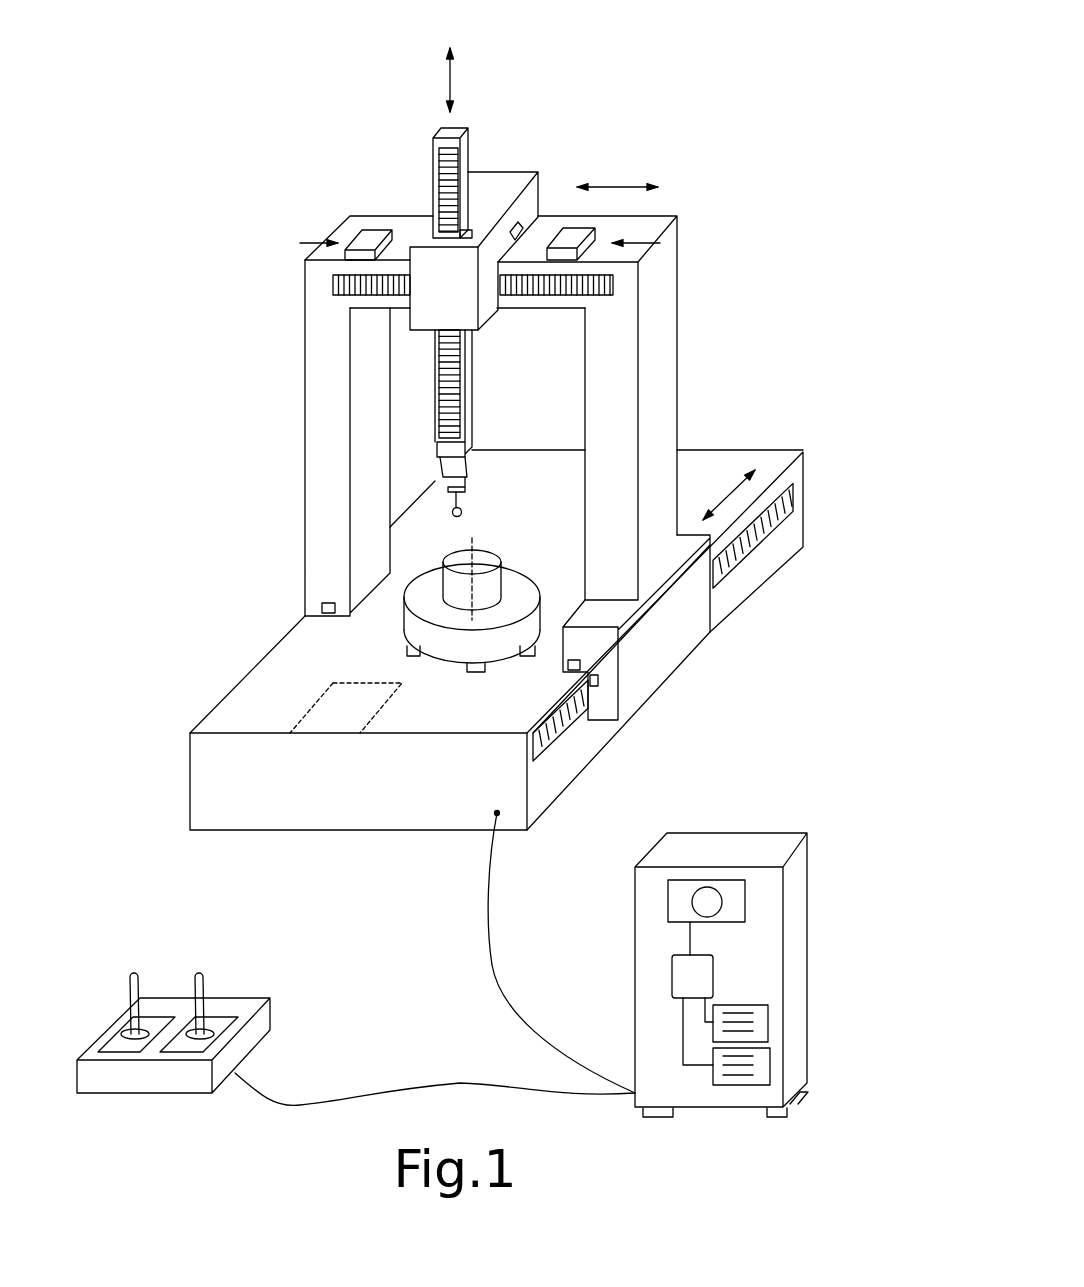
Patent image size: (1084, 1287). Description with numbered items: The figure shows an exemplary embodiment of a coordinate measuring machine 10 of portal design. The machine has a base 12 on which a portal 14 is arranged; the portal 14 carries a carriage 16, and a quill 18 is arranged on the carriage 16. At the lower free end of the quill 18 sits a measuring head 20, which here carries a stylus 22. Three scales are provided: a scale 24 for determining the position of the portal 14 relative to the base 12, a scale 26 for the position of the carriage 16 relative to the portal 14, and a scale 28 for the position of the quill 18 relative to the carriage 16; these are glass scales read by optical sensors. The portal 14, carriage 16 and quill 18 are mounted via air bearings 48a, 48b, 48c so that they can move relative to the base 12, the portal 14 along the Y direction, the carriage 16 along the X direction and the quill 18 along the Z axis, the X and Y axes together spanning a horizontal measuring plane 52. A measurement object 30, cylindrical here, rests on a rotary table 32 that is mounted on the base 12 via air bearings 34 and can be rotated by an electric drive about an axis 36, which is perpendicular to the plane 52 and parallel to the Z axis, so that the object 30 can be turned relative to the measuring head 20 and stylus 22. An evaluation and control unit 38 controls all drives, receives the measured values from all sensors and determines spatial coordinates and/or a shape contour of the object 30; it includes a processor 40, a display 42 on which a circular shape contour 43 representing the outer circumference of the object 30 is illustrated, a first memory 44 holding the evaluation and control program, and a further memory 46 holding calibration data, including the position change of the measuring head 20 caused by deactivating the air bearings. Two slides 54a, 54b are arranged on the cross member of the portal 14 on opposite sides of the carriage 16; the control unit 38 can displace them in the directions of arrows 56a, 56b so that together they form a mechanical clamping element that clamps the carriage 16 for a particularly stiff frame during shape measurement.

The coordinate measuring machine 10 is at (712, 186).
The base 12 is at (243, 718).
The portal 14 is at (328, 372).
The carriage 16 is at (430, 243).
The quill 18 is at (442, 137).
The measuring head 20 is at (462, 465).
The stylus 22 is at (452, 503).
The scale 24 is at (760, 545).
The scale 26 is at (613, 283).
The scale 28 is at (450, 173).
The measurement object 30 is at (492, 545).
The rotary table 32 is at (448, 627).
The air bearings 34 is at (413, 650).
The axis 36 is at (478, 627).
The evaluation and control unit 38 is at (717, 851).
The processor 40 is at (715, 977).
The display 42 is at (748, 902).
The circular shape contour 43 is at (693, 896).
The first memory 44 is at (770, 1020).
The further memory 46 is at (770, 1063).
The air bearing 48a is at (308, 612).
The air bearing 48b is at (523, 224).
The air bearing 48c is at (445, 243).
The plane 52 is at (332, 720).
The slide 54a is at (580, 232).
The slide 54b is at (367, 238).
The arrow 56a is at (660, 243).
The arrow 56b is at (300, 243).